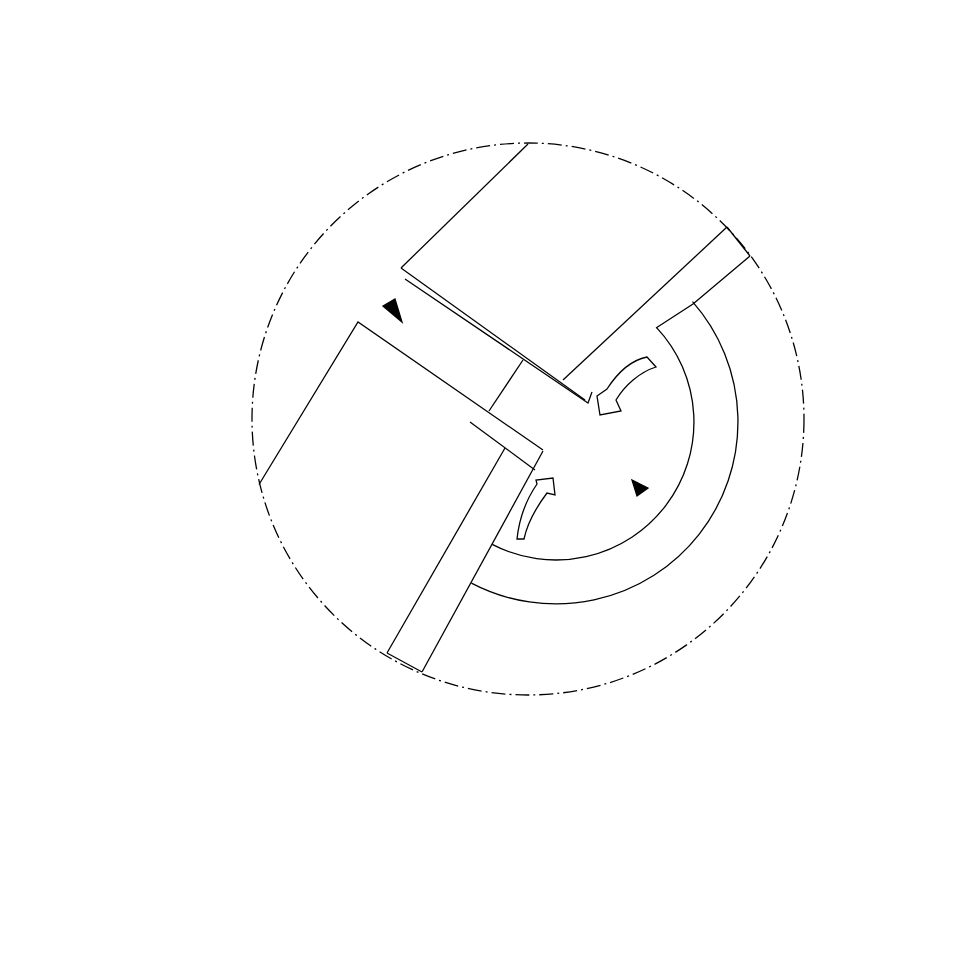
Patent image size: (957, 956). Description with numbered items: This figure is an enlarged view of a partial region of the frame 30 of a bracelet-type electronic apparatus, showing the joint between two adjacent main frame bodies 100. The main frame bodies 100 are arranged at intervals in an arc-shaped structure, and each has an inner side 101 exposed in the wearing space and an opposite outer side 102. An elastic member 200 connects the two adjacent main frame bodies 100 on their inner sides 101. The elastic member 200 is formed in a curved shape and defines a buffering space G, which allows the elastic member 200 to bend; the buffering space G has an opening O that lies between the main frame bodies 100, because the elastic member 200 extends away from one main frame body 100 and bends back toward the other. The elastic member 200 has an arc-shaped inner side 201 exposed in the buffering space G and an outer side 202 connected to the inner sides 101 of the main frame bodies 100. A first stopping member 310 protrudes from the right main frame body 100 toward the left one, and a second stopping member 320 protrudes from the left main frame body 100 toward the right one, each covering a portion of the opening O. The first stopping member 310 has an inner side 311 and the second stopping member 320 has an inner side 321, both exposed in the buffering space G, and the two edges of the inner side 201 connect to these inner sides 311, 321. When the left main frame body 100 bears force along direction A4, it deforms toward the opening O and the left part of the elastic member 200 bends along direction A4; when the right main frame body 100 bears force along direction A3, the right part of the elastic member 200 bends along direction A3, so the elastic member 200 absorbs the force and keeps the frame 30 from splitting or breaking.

The frame 30 is at (41, 55).
The main frame body 100 is at (705, 237).
The inner side 101 is at (737, 268).
The outer side 102 is at (613, 203).
The elastic member 200 is at (694, 500).
The inner side 201 is at (692, 380).
The outer side 202 is at (738, 445).
The first stopping member 310 is at (607, 349).
The inner side 311 is at (608, 378).
The second stopping member 320 is at (500, 487).
The inner side 321 is at (467, 420).
The opening O is at (388, 303).
The buffering space G is at (645, 493).
The direction A3 is at (631, 386).
The direction A4 is at (544, 508).